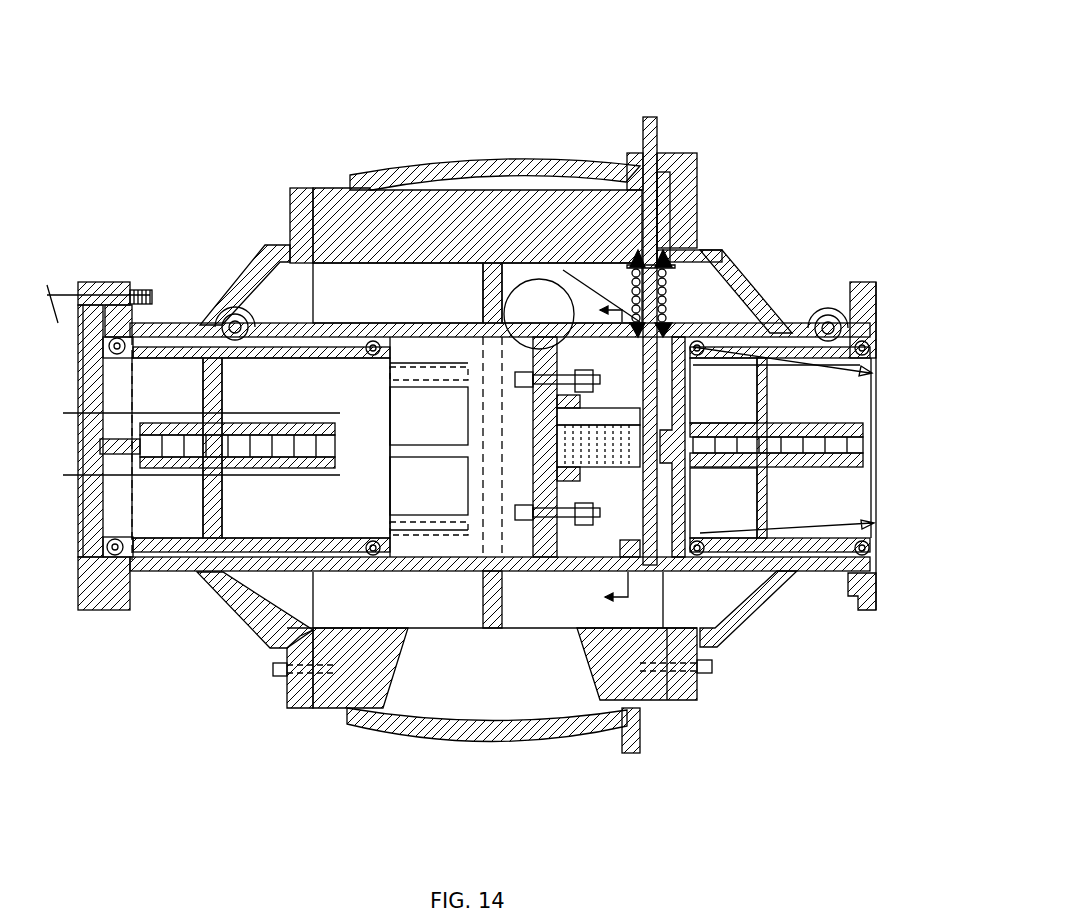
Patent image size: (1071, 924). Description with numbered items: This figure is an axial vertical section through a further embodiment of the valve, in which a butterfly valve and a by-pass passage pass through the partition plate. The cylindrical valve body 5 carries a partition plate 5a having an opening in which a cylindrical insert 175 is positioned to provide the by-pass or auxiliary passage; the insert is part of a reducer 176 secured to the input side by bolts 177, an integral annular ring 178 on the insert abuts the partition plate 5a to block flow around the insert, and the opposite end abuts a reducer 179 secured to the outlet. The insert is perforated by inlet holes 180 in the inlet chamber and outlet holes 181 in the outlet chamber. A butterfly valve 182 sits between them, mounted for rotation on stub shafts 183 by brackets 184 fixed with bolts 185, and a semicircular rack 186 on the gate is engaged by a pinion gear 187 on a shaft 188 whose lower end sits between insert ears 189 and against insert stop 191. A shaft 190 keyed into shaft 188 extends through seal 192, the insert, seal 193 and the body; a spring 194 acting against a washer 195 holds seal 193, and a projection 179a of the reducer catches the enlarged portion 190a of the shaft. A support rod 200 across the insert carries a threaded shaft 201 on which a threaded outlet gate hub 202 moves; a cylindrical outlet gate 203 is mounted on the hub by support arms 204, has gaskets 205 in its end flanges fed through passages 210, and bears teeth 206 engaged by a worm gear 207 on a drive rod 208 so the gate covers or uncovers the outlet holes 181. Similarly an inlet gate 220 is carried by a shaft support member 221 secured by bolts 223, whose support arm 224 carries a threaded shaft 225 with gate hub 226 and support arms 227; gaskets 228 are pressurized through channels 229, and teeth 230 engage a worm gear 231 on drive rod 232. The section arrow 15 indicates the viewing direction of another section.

The cylindrical valve body 5 is at (325, 188).
The partition plate 5a is at (483, 301).
The section direction arrow 15 is at (602, 448).
The cylindrical insert 175 is at (265, 572).
The reducer 176 is at (240, 610).
The bolts 177 is at (278, 677).
The annular ring 178 is at (470, 576).
The reducer 179 is at (740, 607).
The projection 179a is at (635, 152).
The inlet holes 180 is at (433, 423).
The outlet holes 181 is at (730, 330).
The butterfly valve 182 is at (539, 418).
The stub shafts 183 is at (572, 348).
The brackets 184 is at (575, 398).
The bolts 185 is at (575, 375).
The semicircular rack 186 is at (565, 435).
The pinion gear 187 is at (675, 428).
The shaft 188 is at (673, 480).
The insert ears 189 is at (635, 545).
The shaft 190 is at (660, 205).
The enlarged portion 190a is at (627, 152).
The insert stop 191 is at (657, 590).
The seal 192 is at (645, 333).
The seal 193 is at (672, 207).
The spring 194 is at (672, 268).
The washer 195 is at (630, 274).
The support rod 200 is at (683, 388).
The threaded shaft 201 is at (778, 425).
The outlet gate hub 202 is at (793, 470).
The cylindrical outlet gate 203 is at (840, 365).
The support arms 204 is at (770, 395).
The gaskets 205 is at (735, 545).
The longitudinally extending teeth 206 is at (758, 308).
The worm gear 207 is at (818, 315).
The drive rod 208 is at (830, 316).
The passages 210 is at (693, 362).
The inlet gate 220 is at (290, 540).
The shaft support member 221 is at (95, 282).
The bolts 223 is at (115, 300).
The support arm 224 is at (95, 488).
The threaded shaft 225 is at (473, 266).
The gate hub 226 is at (140, 430).
The support arms 227 is at (222, 385).
The gaskets 228 is at (120, 539).
The channels 229 is at (120, 354).
The longitudinally extending teeth 230 is at (328, 322).
The worm gear 231 is at (243, 307).
The drive rod 232 is at (233, 318).